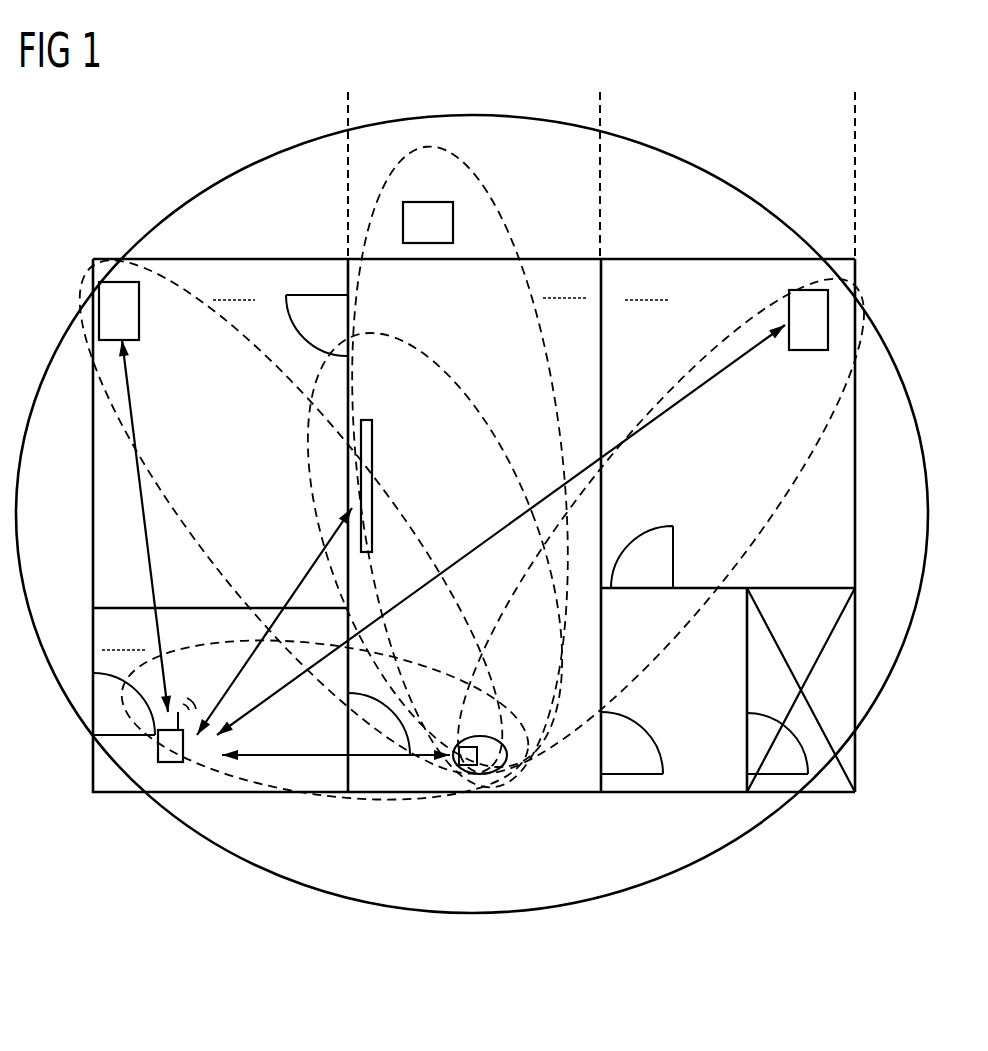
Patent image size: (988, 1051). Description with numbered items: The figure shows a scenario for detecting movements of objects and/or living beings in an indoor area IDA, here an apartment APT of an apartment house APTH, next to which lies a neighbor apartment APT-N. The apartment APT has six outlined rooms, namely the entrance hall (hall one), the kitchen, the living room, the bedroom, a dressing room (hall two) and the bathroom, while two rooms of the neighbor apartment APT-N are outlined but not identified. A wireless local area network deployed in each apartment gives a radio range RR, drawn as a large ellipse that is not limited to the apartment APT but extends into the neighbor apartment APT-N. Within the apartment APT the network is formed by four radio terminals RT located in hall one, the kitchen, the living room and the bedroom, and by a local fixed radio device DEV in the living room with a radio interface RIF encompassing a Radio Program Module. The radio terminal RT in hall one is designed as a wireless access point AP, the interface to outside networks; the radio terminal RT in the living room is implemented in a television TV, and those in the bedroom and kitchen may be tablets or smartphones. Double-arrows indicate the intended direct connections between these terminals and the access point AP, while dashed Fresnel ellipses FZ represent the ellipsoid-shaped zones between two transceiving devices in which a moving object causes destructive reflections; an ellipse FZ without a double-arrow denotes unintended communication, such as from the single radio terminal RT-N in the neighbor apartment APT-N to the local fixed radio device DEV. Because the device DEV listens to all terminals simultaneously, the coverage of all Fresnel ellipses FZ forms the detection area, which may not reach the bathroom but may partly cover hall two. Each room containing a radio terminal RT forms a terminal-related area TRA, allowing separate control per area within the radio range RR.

The radio range RR is at (668, 178).
The neighbor apartment APT-N is at (775, 115).
The radio terminal RT-N is at (453, 222).
The apartment house APTH is at (891, 468).
The indoor area IDA is at (510, 468).
The apartment APT is at (510, 468).
The terminal-related area TRA is at (385, 458).
The radio terminal RT is at (140, 318).
The television TV is at (372, 453).
The wireless access point AP is at (170, 752).
The Fresnel zone FZ is at (557, 378).
The local fixed radio device DEV is at (485, 790).
The radio interface RIF is at (468, 765).